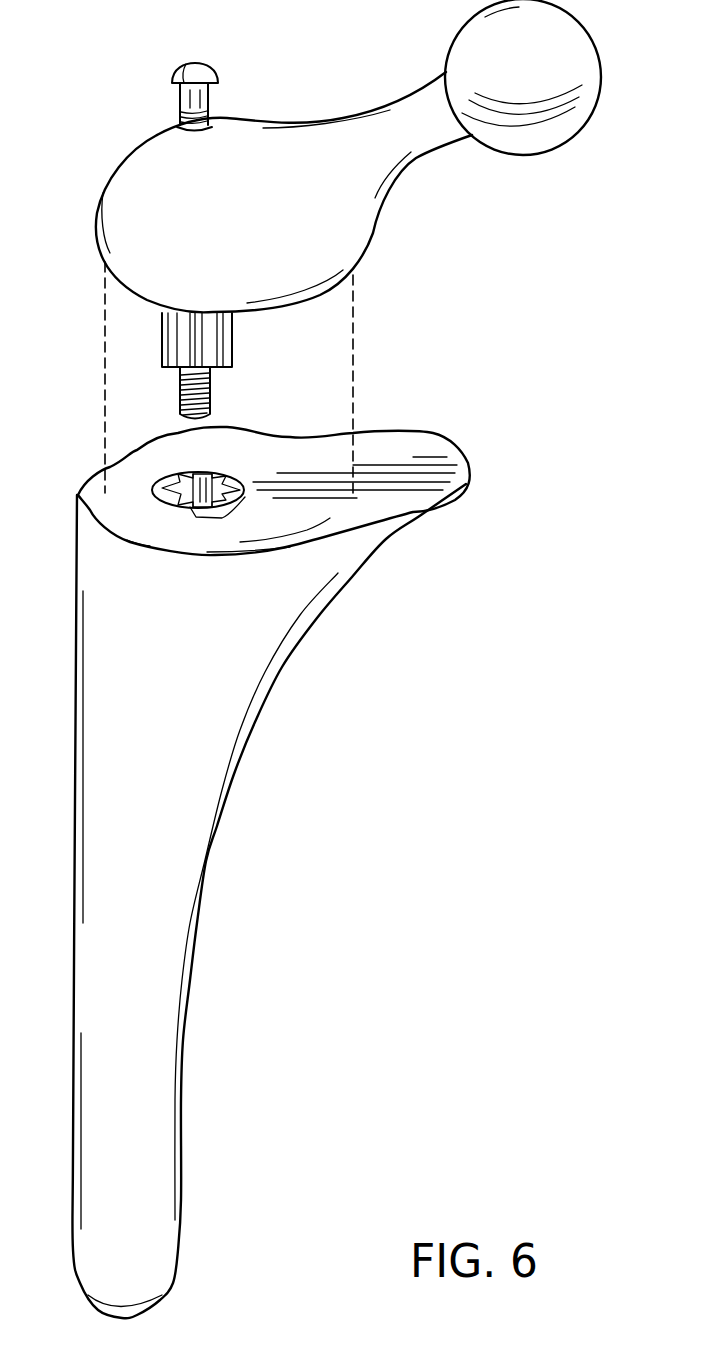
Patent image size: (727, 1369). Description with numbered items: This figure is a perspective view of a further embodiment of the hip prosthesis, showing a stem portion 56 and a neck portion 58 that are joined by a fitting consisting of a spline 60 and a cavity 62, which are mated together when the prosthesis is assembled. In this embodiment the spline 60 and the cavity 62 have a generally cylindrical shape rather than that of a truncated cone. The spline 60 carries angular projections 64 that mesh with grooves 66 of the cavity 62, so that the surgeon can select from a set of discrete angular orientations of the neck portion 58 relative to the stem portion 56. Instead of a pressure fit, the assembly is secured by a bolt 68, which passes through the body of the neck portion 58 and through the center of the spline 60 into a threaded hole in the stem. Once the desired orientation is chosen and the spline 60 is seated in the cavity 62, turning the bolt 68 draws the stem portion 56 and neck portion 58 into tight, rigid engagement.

The stem portion 56 is at (198, 858).
The neck portion 58 is at (362, 227).
The spline 60 is at (218, 343).
The cavity 62 is at (210, 490).
The angular projections 64 is at (180, 357).
The grooves 66 is at (222, 508).
The bolt 68 is at (203, 72).